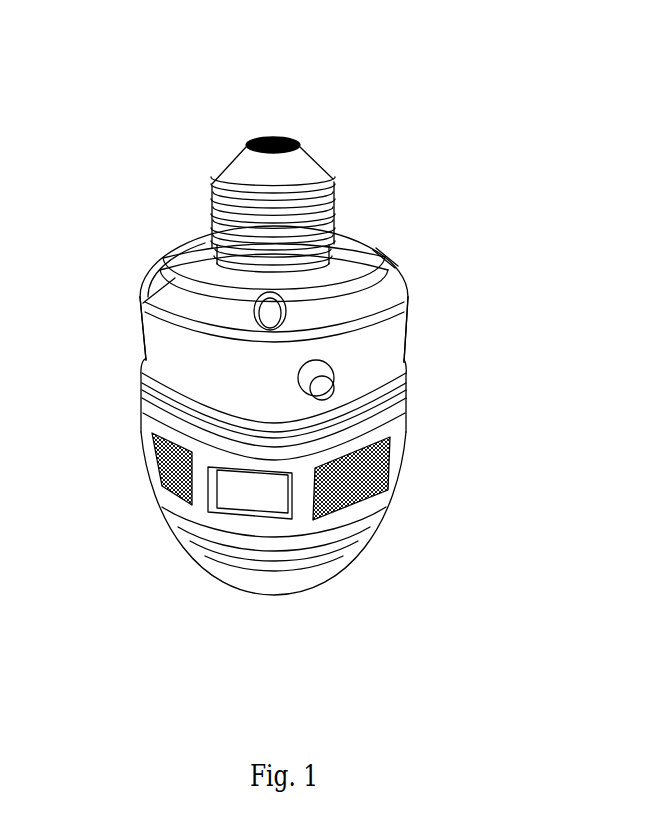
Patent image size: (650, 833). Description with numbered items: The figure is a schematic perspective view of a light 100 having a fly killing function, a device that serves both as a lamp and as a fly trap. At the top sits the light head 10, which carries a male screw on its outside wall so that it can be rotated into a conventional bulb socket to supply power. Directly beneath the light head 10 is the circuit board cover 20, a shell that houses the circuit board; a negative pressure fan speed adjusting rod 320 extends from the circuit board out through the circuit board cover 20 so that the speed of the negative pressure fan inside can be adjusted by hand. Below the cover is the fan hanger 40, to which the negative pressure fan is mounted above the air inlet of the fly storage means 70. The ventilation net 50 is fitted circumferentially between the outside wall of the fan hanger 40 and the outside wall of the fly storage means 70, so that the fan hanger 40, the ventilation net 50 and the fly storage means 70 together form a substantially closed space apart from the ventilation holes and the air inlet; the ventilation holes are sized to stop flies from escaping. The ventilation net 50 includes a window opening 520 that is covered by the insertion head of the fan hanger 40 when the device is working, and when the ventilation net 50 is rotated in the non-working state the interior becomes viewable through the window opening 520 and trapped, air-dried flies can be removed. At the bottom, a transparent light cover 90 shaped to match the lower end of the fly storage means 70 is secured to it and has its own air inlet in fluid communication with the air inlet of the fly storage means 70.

The light having a fly killing function 100 is at (276, 100).
The light head 10 is at (238, 170).
The circuit board cover 20 is at (137, 330).
The negative pressure fan speed adjusting rod 320 is at (331, 383).
The fan hanger 40 is at (137, 402).
The ventilation net 50 is at (403, 453).
The window opening 520 is at (253, 497).
The fly storage means 70 is at (333, 550).
The transparent light cover 90 is at (318, 577).